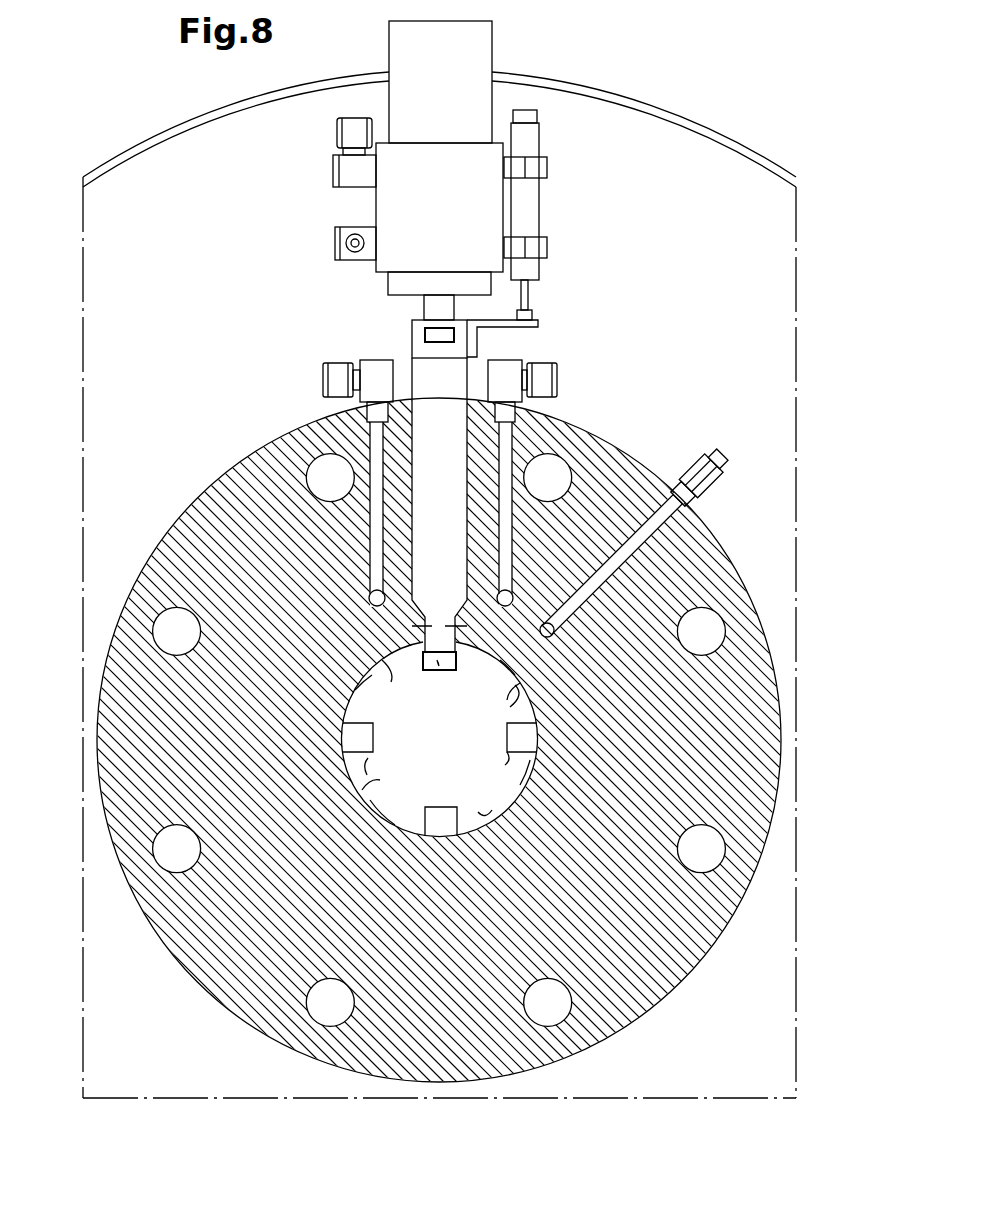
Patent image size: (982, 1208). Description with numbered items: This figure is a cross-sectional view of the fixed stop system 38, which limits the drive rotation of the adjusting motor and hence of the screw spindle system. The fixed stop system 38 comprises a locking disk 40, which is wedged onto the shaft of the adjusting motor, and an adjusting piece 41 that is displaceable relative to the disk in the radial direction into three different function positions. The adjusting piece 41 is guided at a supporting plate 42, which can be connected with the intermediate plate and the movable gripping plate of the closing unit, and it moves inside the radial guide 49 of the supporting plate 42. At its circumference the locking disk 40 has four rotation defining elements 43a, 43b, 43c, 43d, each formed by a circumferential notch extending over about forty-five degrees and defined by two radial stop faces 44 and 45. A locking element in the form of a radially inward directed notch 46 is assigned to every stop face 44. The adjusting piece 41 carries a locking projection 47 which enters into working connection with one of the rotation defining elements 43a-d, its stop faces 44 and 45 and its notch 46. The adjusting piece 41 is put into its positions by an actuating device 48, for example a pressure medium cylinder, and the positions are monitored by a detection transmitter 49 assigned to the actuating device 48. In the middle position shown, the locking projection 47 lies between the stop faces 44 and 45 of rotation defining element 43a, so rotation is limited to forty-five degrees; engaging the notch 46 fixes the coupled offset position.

The fixed stop system 38 is at (410, 640).
The locking disk 40 is at (455, 735).
The adjusting piece 41 is at (432, 407).
The supporting plate 42 is at (757, 352).
The rotation defining element 43a is at (512, 670).
The rotation defining element 43b is at (523, 777).
The rotation defining element 43c is at (387, 812).
The rotation defining element 43d is at (360, 700).
The stop face 44 is at (421, 655).
The stop face 45 is at (391, 682).
The notch 46 is at (438, 662).
The locking projection 47 is at (638, 468).
The actuating device 48 is at (463, 88).
The radial guide 49 is at (520, 305).